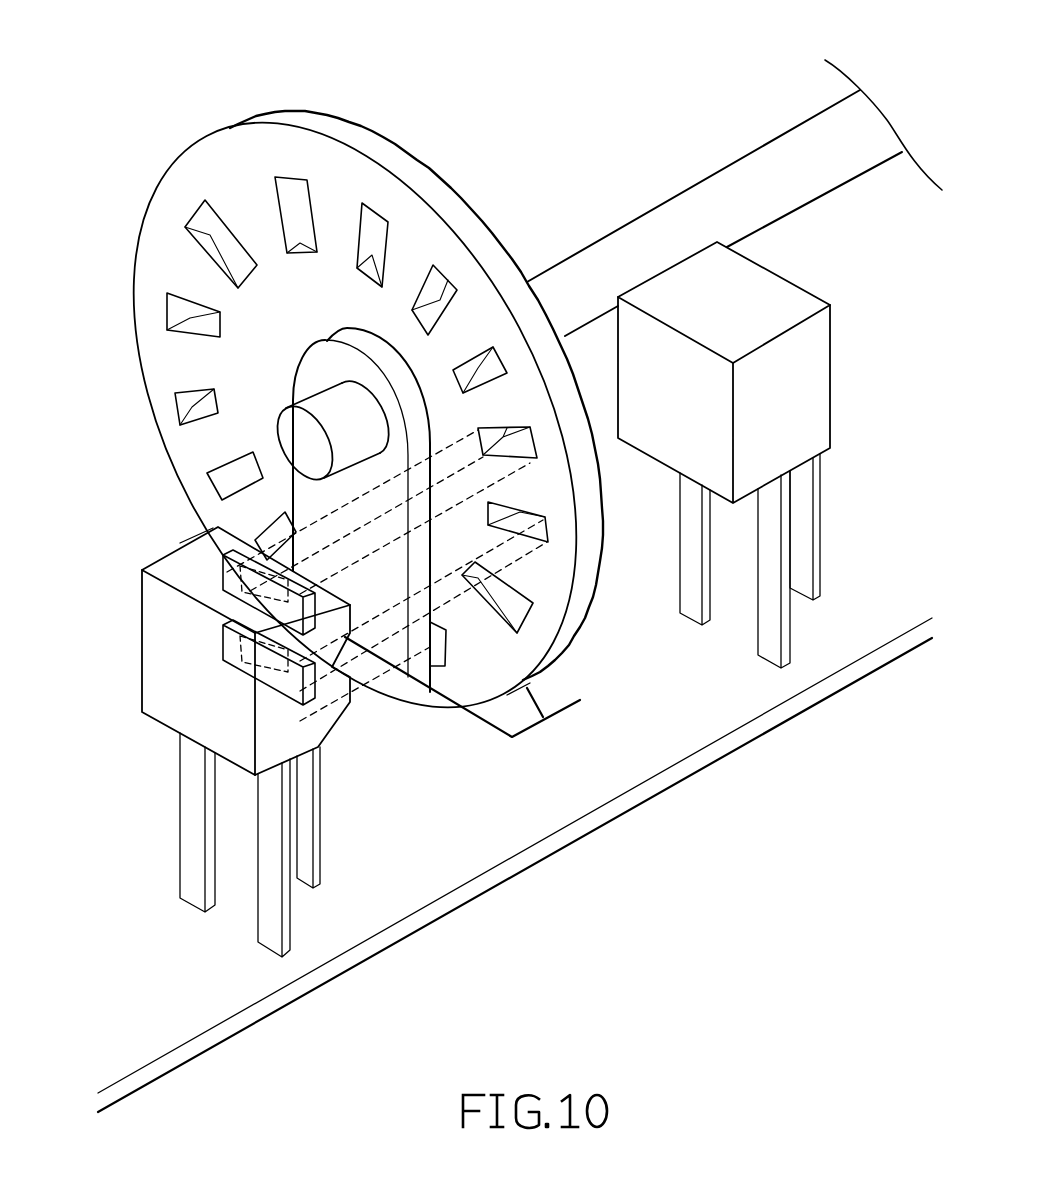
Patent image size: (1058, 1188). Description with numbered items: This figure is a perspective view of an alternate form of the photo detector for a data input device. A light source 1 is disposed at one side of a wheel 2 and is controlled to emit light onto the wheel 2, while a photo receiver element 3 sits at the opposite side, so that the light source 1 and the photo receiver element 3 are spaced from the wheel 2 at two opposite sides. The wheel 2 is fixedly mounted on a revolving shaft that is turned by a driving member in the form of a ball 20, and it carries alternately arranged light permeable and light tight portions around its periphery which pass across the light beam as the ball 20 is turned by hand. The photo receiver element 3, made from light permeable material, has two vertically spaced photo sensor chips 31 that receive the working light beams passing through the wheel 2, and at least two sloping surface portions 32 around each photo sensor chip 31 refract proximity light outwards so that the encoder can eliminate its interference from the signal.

The light source 1 is at (748, 292).
The wheel 2 is at (340, 188).
The ball 20 is at (323, 408).
The photo receiver element 3 is at (172, 687).
The photo sensor chips 31 is at (223, 577).
The sloping surface portions 32 is at (347, 720).